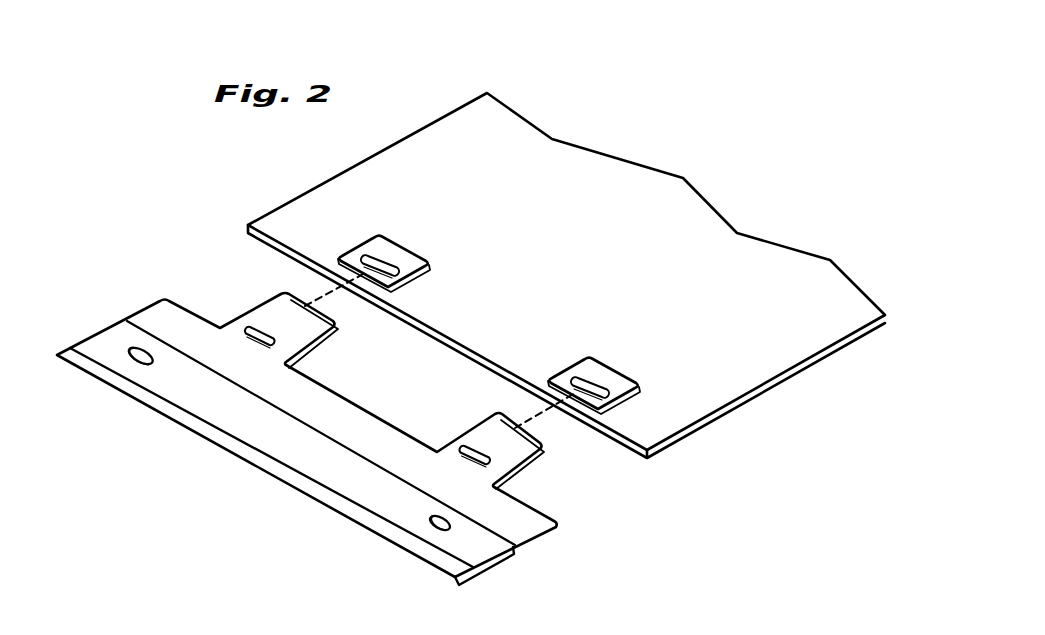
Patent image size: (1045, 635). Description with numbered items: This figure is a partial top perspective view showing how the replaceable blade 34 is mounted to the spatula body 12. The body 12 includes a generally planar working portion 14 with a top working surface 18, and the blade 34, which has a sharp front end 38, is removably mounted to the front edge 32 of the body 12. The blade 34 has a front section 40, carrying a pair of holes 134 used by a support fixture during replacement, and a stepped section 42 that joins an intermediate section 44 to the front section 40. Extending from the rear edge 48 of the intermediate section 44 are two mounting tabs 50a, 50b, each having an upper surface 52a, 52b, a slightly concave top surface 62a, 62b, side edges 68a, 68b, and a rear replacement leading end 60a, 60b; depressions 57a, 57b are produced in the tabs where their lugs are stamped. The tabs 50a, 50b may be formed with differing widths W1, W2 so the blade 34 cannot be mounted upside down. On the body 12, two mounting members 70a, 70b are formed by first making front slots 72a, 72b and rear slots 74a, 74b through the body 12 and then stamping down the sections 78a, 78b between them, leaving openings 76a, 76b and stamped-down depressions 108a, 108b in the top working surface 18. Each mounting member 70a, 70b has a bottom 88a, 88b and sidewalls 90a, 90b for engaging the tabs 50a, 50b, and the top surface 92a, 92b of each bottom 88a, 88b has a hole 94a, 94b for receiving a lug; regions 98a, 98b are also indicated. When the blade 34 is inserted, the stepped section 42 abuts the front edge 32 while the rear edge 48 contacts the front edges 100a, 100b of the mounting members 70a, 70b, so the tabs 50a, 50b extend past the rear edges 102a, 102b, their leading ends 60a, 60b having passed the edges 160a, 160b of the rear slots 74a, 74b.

The body 12 is at (374, 53).
The working portion 14 is at (833, 300).
The top working surface 18 is at (487, 110).
The front edge 32 is at (468, 350).
The blade 34 is at (352, 487).
The sharp front end 38 is at (95, 373).
The front section 40 is at (490, 552).
The stepped section 42 is at (528, 552).
The intermediate section 44 is at (160, 317).
The rear edge 48 is at (395, 422).
The tab 50a is at (223, 290).
The tab 50b is at (554, 468).
The upper surface 52a is at (247, 288).
The upper surface 52b is at (562, 474).
The depression 57a is at (246, 331).
The depression 57b is at (463, 453).
The replacement leading end 60a is at (297, 294).
The replacement leading end 60b is at (548, 450).
The concave top surface 62a is at (218, 322).
The concave top surface 62b is at (500, 463).
The side edge 68a is at (350, 336).
The side edge 68b is at (566, 484).
The mounting member 70a is at (328, 194).
The mounting member 70b is at (640, 385).
The front slot 72a is at (338, 256).
The front slot 72b is at (552, 383).
The rear slot 74a is at (420, 252).
The rear slot 74b is at (592, 360).
The opening 76a is at (335, 250).
The opening 76b is at (588, 359).
The section 78a is at (386, 242).
The section 78b is at (625, 357).
The bottom 88a is at (398, 245).
The bottom 88b is at (605, 406).
The sidewalls 90a is at (342, 243).
The sidewalls 90b is at (578, 366).
The top surface 92a is at (430, 262).
The top surface 92b is at (630, 360).
The hole 94a is at (413, 283).
The hole 94b is at (558, 392).
The first pad flange 98a is at (425, 274).
The second pad flange 98b is at (562, 375).
The front edge 100a is at (384, 290).
The front edge 100b is at (580, 400).
The rear edge 102a is at (412, 248).
The rear edge 102b is at (600, 358).
The stamped down depression 108a is at (306, 253).
The stamped down depression 108b is at (660, 382).
The holes 134 is at (139, 350).
The edge 160a is at (440, 262).
The edge 160b is at (640, 368).
The width W1 is at (278, 330).
The width W2 is at (489, 450).